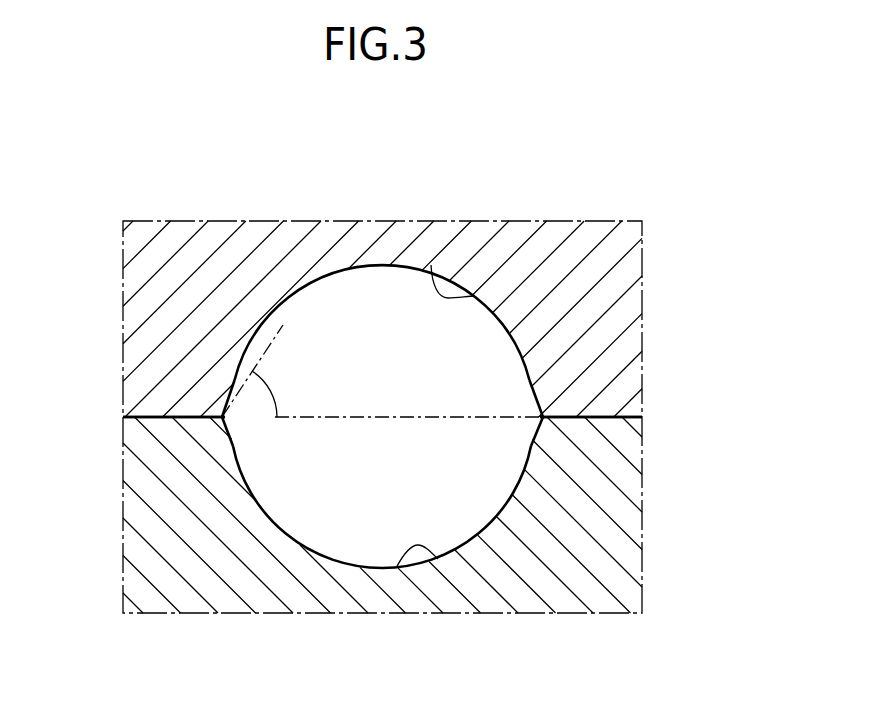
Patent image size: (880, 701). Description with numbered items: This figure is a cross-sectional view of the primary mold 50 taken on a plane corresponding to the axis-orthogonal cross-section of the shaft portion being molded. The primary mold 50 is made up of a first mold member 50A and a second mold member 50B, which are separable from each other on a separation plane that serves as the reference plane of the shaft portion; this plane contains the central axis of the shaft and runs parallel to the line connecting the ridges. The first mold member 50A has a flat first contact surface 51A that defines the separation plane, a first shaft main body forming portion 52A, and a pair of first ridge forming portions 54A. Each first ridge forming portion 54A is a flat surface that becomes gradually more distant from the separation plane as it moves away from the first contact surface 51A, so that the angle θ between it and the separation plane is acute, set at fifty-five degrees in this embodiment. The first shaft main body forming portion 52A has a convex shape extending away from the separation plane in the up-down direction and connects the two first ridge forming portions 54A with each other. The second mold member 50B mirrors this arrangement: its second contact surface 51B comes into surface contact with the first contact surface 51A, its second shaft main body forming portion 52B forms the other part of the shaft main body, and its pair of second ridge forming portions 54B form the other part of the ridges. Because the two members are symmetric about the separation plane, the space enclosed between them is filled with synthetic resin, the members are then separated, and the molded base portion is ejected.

The primary mold 50 is at (742, 317).
The first mold member 50A is at (636, 338).
The second mold member 50B is at (636, 492).
The first contact surface 51A is at (158, 418).
The second contact surface 51B is at (592, 413).
The first shaft main body forming portion 52A is at (431, 265).
The second shaft main body forming portion 52B is at (396, 568).
The first ridge forming portions 54A is at (228, 408).
The second ridge forming portions 54B is at (226, 427).